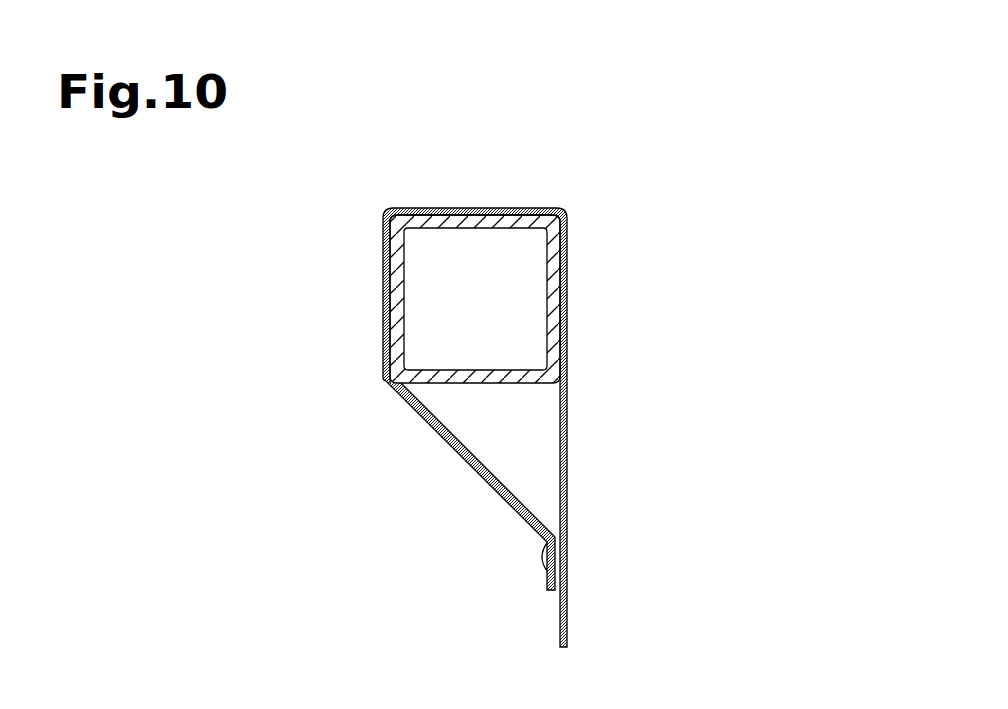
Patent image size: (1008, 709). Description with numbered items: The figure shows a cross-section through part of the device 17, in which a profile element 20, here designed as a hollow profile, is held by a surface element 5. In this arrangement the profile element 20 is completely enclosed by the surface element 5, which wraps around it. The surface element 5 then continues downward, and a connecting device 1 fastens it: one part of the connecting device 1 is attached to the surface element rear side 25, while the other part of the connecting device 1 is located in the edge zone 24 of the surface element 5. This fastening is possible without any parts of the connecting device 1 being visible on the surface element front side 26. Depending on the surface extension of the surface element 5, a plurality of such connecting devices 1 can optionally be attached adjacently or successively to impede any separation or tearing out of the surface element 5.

The device 17 is at (716, 158).
The profile element 20 is at (384, 273).
The surface element front side 26 is at (576, 269).
The edge zone 24 is at (403, 423).
The surface element rear side 25 is at (562, 450).
The surface element 5 is at (567, 407).
The connecting device 1 is at (563, 555).